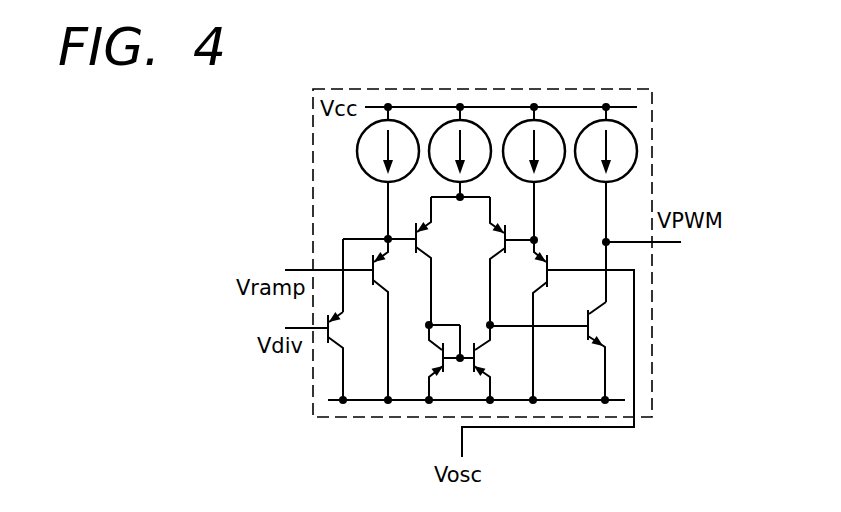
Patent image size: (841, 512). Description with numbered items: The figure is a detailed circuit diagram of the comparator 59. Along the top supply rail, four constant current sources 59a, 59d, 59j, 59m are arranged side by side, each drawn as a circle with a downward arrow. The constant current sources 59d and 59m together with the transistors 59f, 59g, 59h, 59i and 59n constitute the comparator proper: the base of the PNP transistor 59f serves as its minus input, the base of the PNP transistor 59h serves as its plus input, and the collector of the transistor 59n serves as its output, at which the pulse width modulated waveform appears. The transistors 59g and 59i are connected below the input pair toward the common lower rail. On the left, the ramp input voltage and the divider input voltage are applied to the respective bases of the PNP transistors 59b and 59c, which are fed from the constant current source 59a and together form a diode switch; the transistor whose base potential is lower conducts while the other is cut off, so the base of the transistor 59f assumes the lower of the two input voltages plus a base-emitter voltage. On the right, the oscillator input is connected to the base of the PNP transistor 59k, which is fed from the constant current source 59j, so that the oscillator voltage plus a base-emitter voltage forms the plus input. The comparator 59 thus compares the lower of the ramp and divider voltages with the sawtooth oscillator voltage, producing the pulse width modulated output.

The comparator 59 is at (617, 89).
The constant current source 59a is at (400, 118).
The PNP transistor 59b is at (399, 319).
The PNP transistor 59c is at (353, 356).
The constant current source 59d is at (475, 120).
The PNP transistor 59f is at (439, 261).
The transistor 59g is at (416, 362).
The PNP transistor 59h is at (511, 261).
The transistor 59i is at (495, 362).
The constant current source 59j is at (547, 120).
The PNP transistor 59k is at (562, 320).
The constant current source 59m is at (637, 152).
The transistor 59n is at (582, 351).